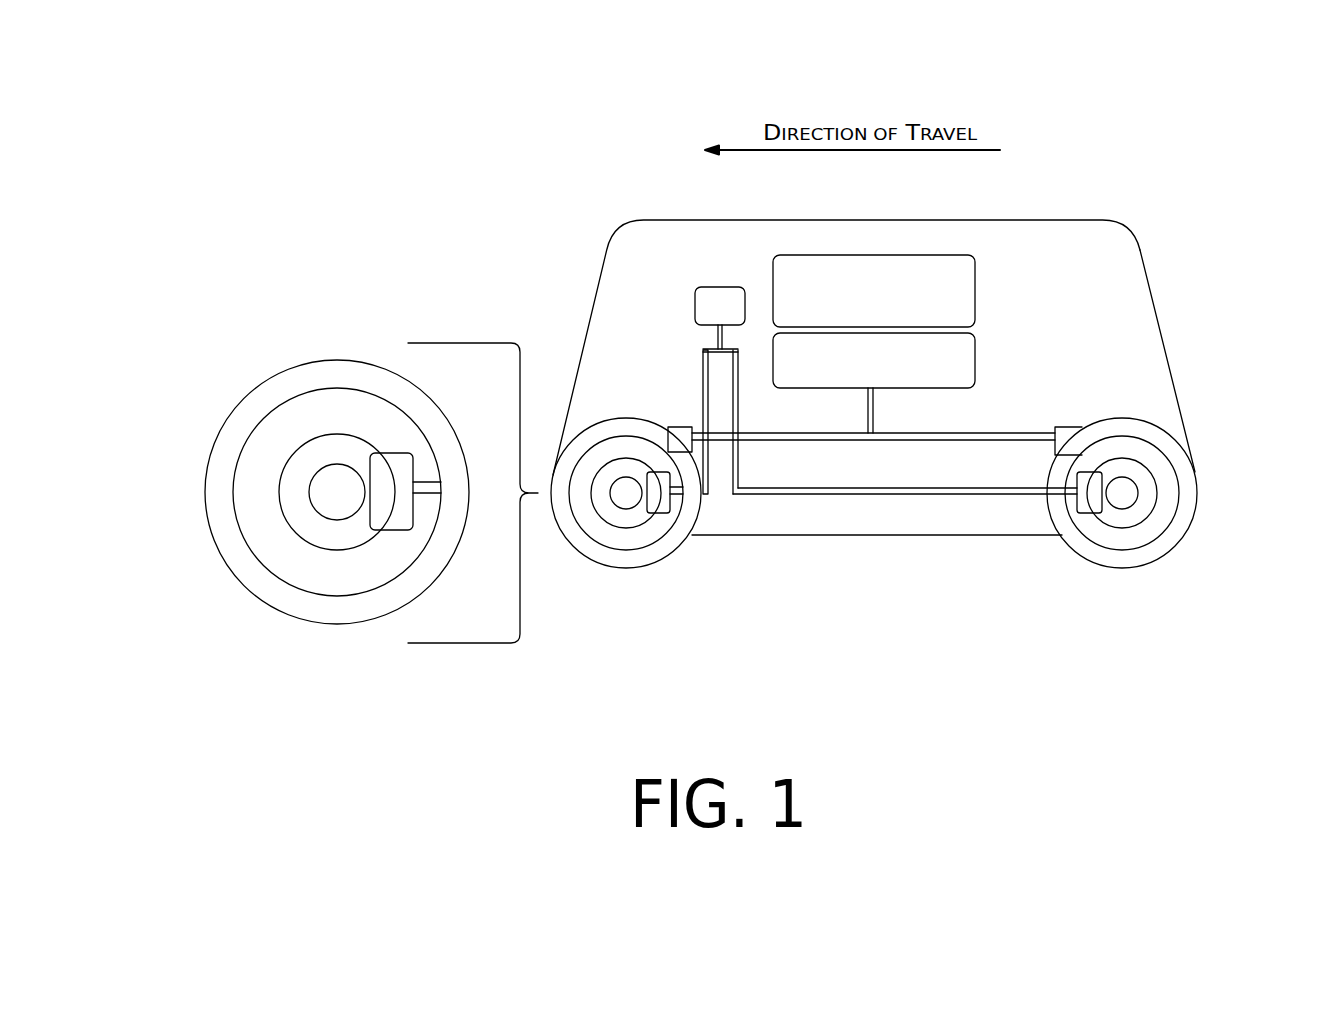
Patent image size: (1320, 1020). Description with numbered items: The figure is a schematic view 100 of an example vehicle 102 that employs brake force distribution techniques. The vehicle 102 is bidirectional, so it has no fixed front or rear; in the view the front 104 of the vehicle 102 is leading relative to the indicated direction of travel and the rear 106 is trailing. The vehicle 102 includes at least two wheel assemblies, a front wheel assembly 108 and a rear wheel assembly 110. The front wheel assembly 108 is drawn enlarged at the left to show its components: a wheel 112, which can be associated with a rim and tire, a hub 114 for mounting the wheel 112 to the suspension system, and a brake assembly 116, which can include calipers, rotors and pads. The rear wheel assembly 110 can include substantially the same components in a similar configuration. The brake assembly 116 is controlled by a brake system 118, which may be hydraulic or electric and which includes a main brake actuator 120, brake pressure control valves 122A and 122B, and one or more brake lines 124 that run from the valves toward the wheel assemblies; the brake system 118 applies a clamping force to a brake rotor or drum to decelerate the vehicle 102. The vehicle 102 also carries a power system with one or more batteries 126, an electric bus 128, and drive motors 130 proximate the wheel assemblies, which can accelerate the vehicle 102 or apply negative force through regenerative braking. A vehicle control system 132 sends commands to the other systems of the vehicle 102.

The schematic view 100 is at (286, 107).
The vehicle 102 is at (683, 194).
The front 104 is at (578, 276).
The rear 106 is at (1176, 344).
The front wheel assembly 108 is at (320, 330).
The rear wheel assembly 110 is at (1172, 417).
The wheel 112 is at (265, 407).
The hub 114 is at (277, 532).
The brake assembly 116 is at (382, 506).
The brake system 118 is at (729, 275).
The main brake actuator 120 is at (720, 306).
The brake pressure control valve 122A is at (692, 348).
The brake pressure control valve 122B is at (745, 337).
The brake line 124 is at (827, 495).
The battery 126 is at (874, 383).
The electric bus 128 is at (940, 437).
The drive motor 130 is at (1060, 428).
The vehicle control system 132 is at (874, 291).